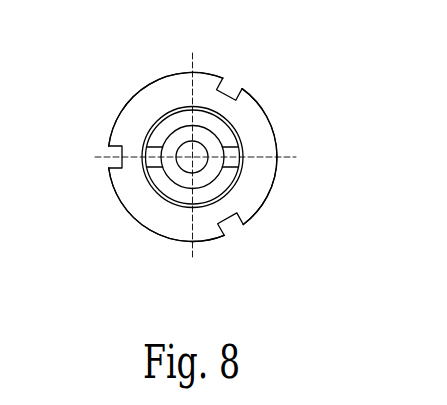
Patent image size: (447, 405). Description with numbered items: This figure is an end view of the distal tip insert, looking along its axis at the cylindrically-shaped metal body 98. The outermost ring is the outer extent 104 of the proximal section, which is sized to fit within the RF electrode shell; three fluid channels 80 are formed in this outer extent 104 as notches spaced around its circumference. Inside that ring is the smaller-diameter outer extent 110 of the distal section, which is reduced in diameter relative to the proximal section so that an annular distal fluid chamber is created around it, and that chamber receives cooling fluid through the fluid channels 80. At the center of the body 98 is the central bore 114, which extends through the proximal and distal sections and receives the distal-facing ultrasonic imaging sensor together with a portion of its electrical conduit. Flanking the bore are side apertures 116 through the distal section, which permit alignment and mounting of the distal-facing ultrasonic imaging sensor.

The fluid channels 80 is at (233, 86).
The metal body 98 is at (263, 142).
The outer extent of the proximal section 104 is at (131, 207).
The outer extent of the distal section 110 is at (211, 205).
The central bore 114 is at (198, 162).
The side apertures 116 is at (152, 152).